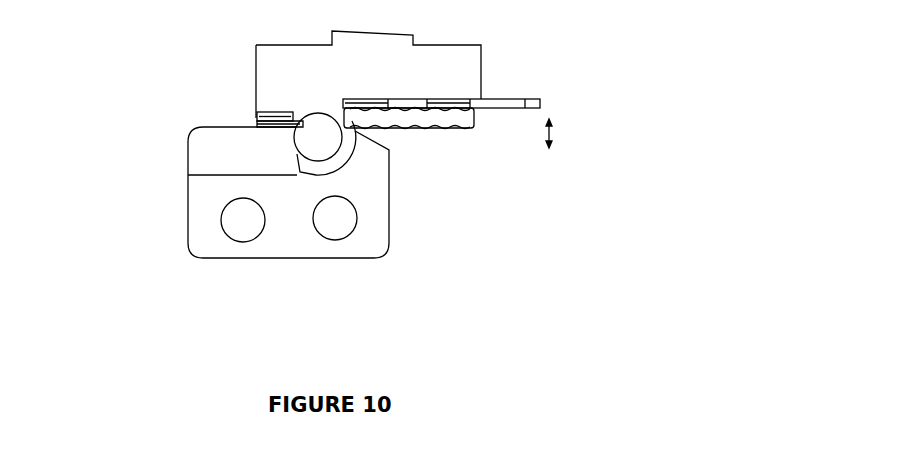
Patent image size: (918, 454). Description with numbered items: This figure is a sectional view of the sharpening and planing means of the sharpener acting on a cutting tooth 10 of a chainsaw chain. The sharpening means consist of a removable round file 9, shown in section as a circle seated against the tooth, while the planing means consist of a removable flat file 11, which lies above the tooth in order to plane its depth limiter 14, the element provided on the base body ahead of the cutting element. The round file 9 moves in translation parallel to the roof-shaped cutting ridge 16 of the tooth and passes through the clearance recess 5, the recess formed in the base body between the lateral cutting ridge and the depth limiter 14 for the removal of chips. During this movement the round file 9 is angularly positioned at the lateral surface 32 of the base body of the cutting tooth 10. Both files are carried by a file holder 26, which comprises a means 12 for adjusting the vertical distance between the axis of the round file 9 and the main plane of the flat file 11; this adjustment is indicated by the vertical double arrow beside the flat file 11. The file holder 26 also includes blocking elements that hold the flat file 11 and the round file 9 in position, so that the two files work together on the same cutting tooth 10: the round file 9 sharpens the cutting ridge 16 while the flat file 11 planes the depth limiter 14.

The cutting tooth 10 is at (120, 296).
The clearance recess 5 is at (320, 190).
The round file 9 is at (313, 143).
The depth limiter 14 is at (365, 143).
The lateral surface 32 is at (262, 143).
The roof-shaped cutting ridge 16 is at (292, 119).
The file holder 26 is at (445, 62).
The means for adjusting the vertical distance 12 is at (540, 105).
The flat file 11 is at (442, 118).